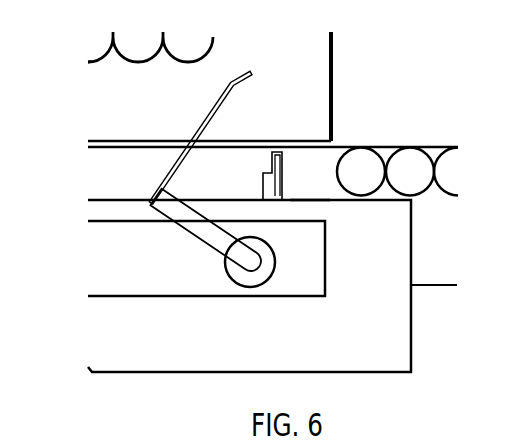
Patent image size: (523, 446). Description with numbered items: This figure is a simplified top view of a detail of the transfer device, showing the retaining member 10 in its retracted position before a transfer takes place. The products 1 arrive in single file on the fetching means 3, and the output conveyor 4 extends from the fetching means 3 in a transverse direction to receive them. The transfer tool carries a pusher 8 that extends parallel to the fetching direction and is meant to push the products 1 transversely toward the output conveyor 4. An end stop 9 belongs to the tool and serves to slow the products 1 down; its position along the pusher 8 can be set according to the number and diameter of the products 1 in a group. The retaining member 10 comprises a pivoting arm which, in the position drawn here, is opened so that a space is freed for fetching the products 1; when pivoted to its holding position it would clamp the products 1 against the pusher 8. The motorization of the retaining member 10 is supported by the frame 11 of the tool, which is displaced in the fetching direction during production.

The products 1 is at (408, 169).
The fetching means 3 is at (432, 268).
The output conveyor 4 is at (318, 56).
The pusher 8 is at (306, 199).
The end stop 9 is at (277, 152).
The retaining member 10 is at (172, 168).
The frame 11 is at (193, 358).